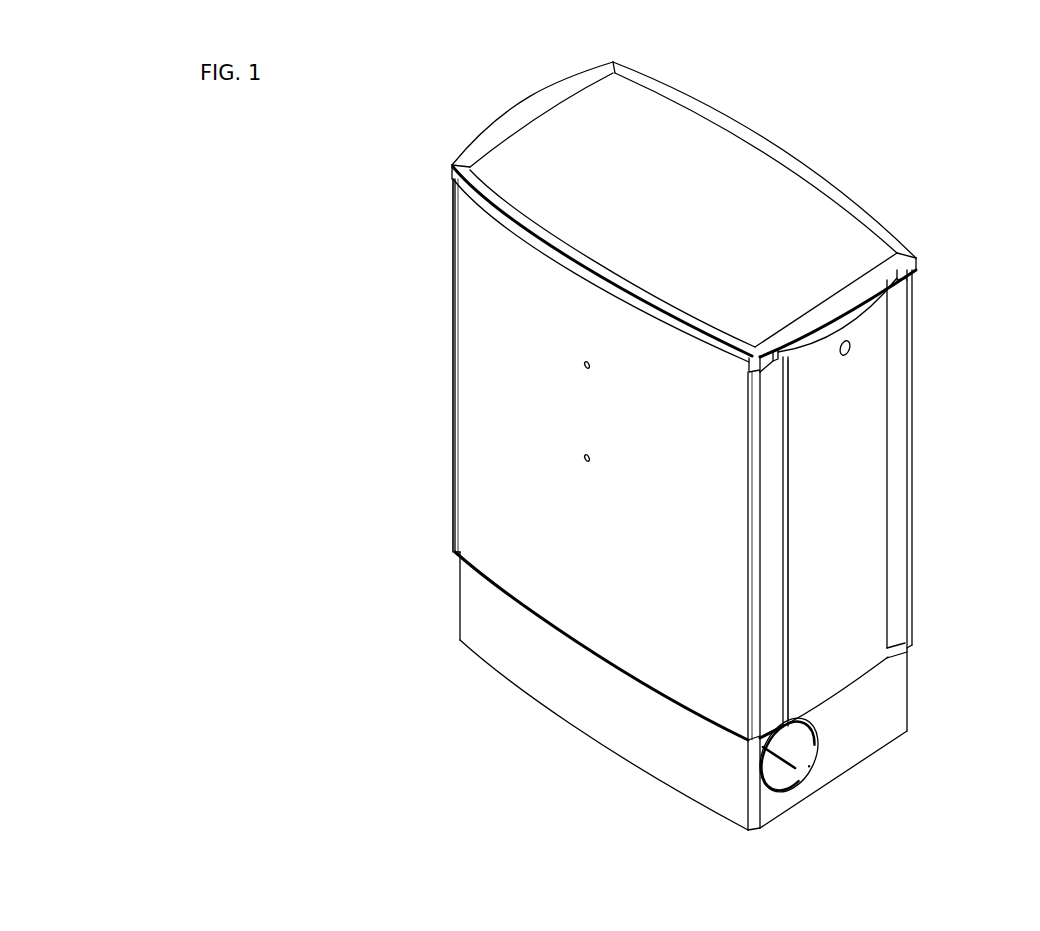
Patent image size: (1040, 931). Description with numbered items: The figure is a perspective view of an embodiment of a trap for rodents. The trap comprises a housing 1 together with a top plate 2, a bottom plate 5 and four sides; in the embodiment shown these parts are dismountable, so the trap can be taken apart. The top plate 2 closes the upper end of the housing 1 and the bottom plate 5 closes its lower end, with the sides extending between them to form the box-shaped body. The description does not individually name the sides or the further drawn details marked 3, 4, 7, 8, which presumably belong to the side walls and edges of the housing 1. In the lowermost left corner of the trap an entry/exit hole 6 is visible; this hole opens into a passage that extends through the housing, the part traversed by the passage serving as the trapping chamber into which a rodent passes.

The housing 1 is at (905, 126).
The top plate 2 is at (870, 253).
The front panel 3 is at (475, 470).
The side housing 4 is at (913, 511).
The bottom plate 5 is at (883, 743).
The entry/exit hole 6 is at (781, 768).
The side edge 7 is at (455, 322).
The side panel 8 is at (858, 600).